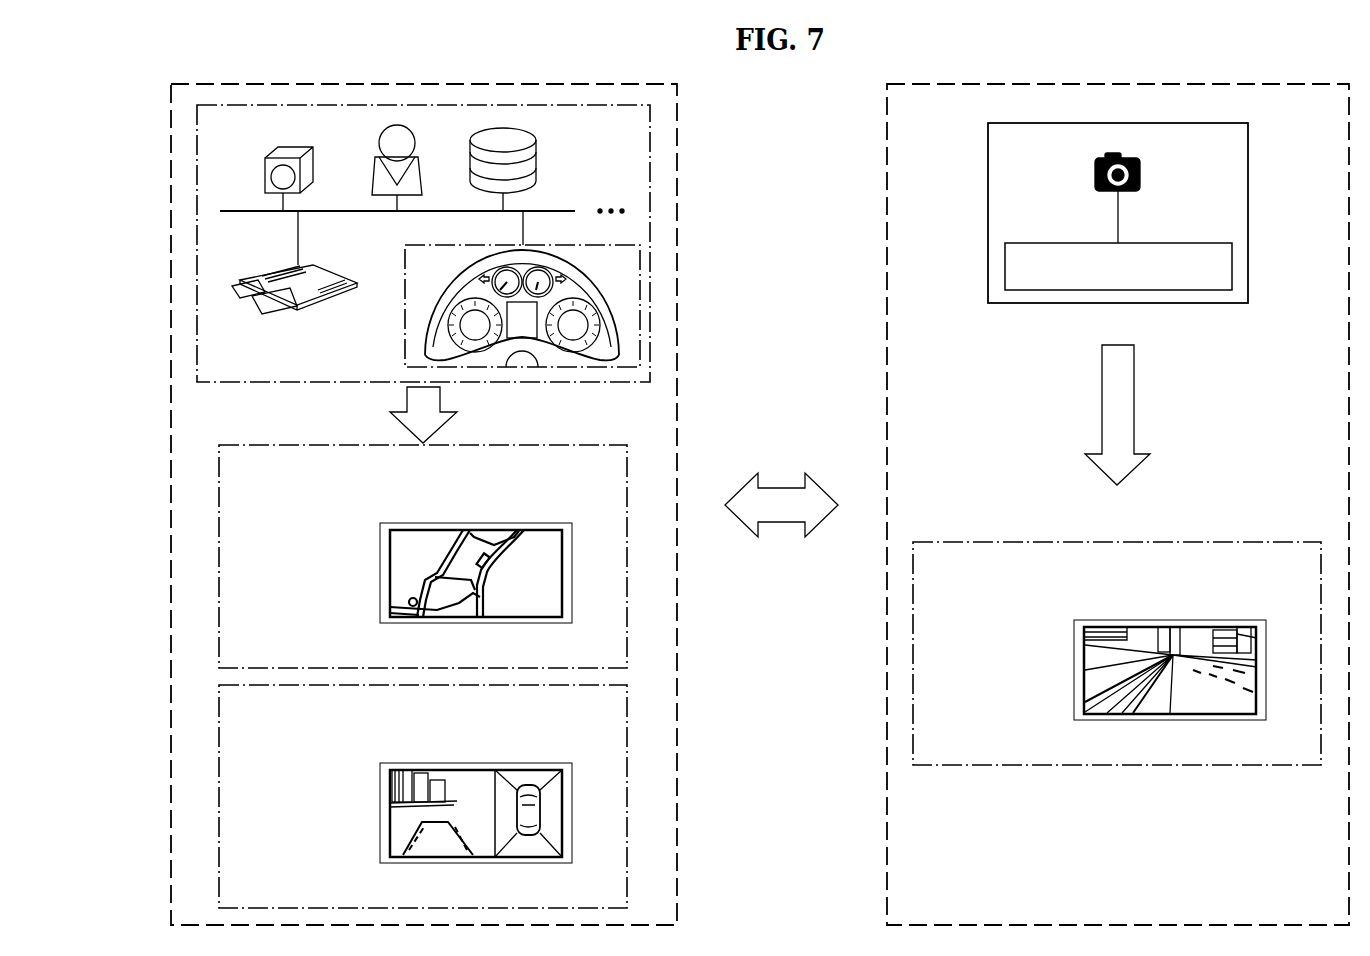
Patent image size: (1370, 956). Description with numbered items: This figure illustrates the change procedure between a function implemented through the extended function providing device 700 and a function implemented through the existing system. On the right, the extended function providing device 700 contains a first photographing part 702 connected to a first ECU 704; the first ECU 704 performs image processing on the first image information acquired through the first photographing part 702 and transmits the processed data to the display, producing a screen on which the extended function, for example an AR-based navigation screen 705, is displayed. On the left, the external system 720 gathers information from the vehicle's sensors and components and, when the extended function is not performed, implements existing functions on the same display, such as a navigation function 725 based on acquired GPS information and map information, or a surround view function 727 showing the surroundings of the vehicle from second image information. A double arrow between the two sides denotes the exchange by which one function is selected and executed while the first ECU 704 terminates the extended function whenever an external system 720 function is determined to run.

The extended function providing device 700 is at (1150, 213).
The first photographing part 702 is at (1142, 175).
The first ECU 704 is at (1232, 266).
The navigation screen 705 is at (1197, 713).
The external system 720 is at (650, 188).
The navigation function 725 is at (562, 562).
The surround view function 727 is at (562, 800).